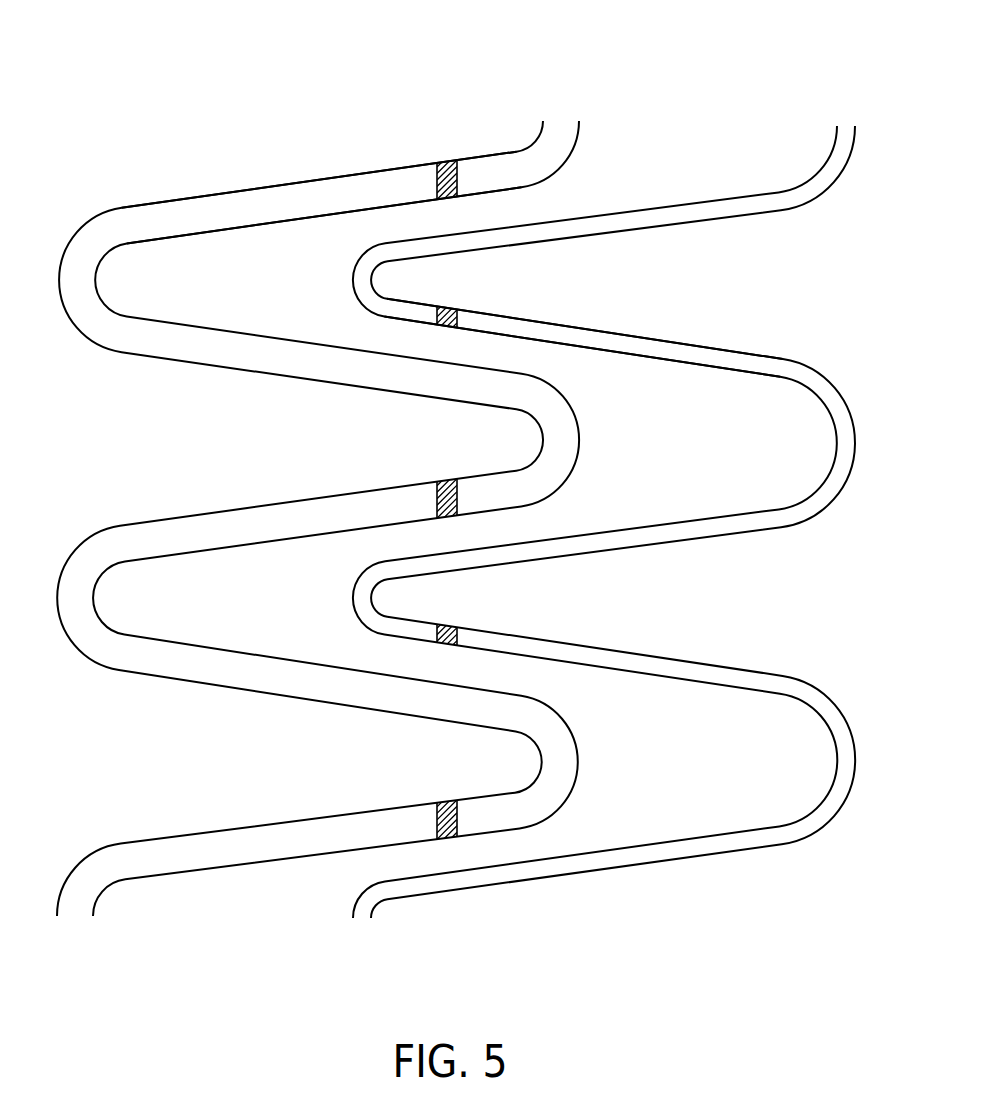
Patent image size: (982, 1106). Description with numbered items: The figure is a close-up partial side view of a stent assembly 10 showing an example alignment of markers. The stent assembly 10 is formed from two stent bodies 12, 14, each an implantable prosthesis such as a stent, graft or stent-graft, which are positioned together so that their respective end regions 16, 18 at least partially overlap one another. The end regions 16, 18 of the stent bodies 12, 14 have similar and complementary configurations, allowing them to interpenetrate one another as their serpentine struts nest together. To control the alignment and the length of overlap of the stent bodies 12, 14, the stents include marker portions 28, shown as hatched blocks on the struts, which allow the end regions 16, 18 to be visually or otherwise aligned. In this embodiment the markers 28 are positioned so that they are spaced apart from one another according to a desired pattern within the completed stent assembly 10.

The stent assembly 10 is at (456, 462).
The stent body 12 is at (604, 522).
The stent body 14 is at (318, 511).
The end region 16 is at (487, 303).
The end region 18 is at (227, 173).
The marker portion 28 is at (448, 163).